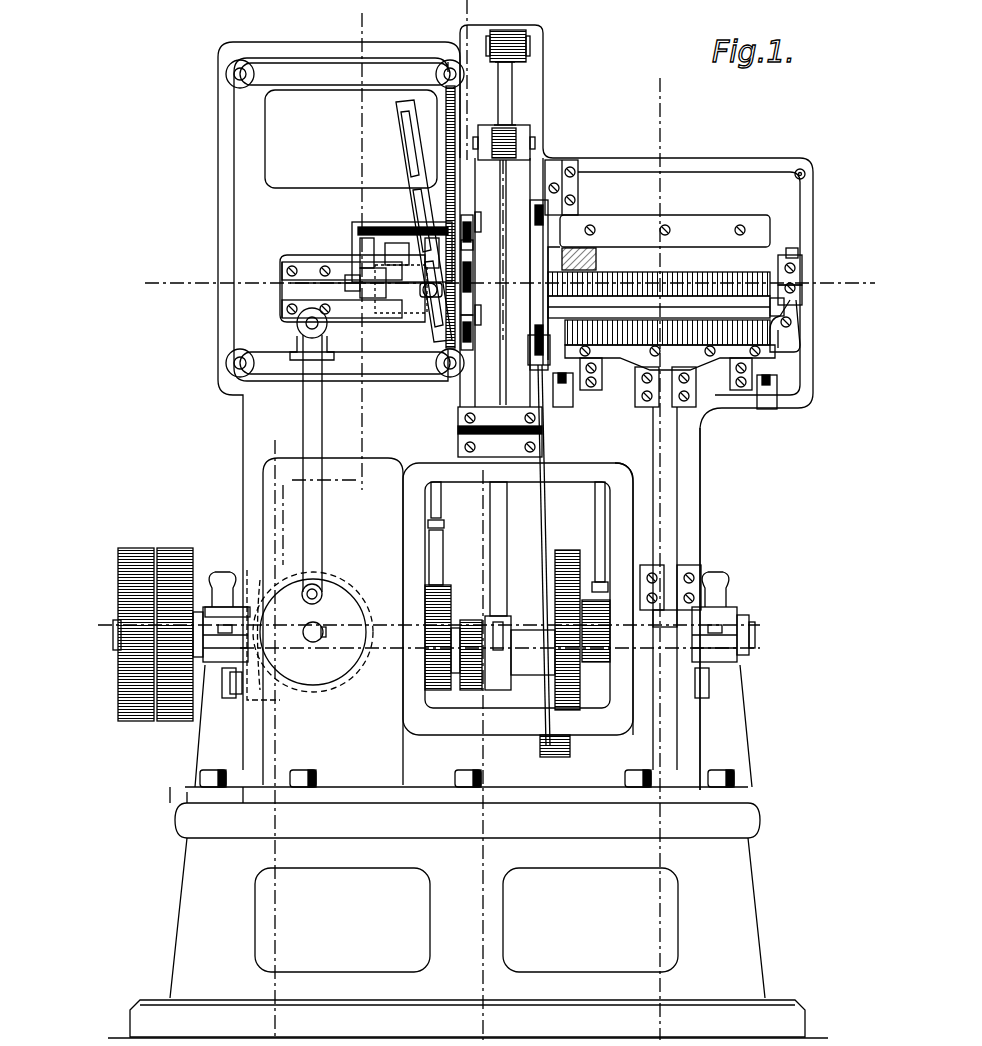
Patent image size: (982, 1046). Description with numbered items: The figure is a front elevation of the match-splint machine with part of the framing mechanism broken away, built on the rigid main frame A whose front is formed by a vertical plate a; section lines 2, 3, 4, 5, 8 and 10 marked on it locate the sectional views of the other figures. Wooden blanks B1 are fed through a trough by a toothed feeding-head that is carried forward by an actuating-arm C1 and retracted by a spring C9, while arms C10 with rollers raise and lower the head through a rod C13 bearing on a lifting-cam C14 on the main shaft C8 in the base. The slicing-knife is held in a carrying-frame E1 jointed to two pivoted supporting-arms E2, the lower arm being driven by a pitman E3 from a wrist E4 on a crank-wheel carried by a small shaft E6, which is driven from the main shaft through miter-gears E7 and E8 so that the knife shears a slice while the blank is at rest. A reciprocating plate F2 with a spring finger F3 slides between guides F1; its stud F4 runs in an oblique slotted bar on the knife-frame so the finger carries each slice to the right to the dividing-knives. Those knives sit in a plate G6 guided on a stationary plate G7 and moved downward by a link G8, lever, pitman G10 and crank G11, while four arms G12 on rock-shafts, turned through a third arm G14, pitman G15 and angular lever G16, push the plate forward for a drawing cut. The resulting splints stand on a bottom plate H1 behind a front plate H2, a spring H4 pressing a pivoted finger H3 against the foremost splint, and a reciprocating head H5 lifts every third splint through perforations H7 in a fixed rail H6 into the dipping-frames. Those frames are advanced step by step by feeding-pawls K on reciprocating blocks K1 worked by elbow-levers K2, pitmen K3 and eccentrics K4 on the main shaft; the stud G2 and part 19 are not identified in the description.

The main frame A is at (222, 148).
The front plate a is at (466, 468).
The knife carrying-frame E1 is at (452, 98).
The supporting-arms E2 is at (312, 75).
The pitman E3 is at (318, 537).
The wrist E4 is at (318, 598).
The small shaft E6 is at (304, 635).
The miter-gear E7 is at (312, 696).
The miter-gear E8 is at (258, 592).
The guide F1 is at (315, 272).
The horizontally-reciprocating plate F2 is at (401, 289).
The spring finger F3 is at (467, 292).
The stud or roller F4 is at (437, 307).
The wooden blocks or blanks B1 is at (384, 262).
The actuating-arm C1 is at (440, 640).
The main shaft C8 is at (755, 634).
The spring C9 is at (113, 630).
The arms C10 is at (358, 253).
The rod C13 is at (442, 506).
The lifting-cam C14 is at (445, 612).
The roller G2 is at (517, 50).
The knife-bearing plate G6 is at (505, 160).
The stationary plate G7 is at (505, 282).
The link G8 is at (510, 100).
The pitman G10 is at (500, 537).
The crank G11 is at (476, 680).
The arms G12 is at (478, 232).
The third arm G14 is at (540, 348).
The pitman G15 is at (540, 397).
The angular lever G16 is at (550, 683).
The bottom plate H1 is at (659, 304).
The front plate H2 is at (659, 299).
The pivoted finger H3 is at (762, 303).
The spring H4 is at (667, 332).
The vertical reciprocating head H5 is at (665, 557).
The fixed rail H6 is at (659, 275).
The openings or perforations H7 is at (659, 287).
The feeding-pawls K is at (560, 256).
The reciprocating blocks K1 is at (808, 264).
The elbow-levers K2 is at (810, 310).
The pitmen K3 is at (598, 507).
The eccentrics K4 is at (600, 664).
The section line 10- 10 is at (493, 300).
The pin 19 is at (493, 212).
The section line 2- 2 is at (378, 33).
The section line 3- 3 is at (478, 13).
The section line 4- 4 is at (686, 108).
The section line 5- 5 is at (507, 283).
The section line 8- 8 is at (362, 250).